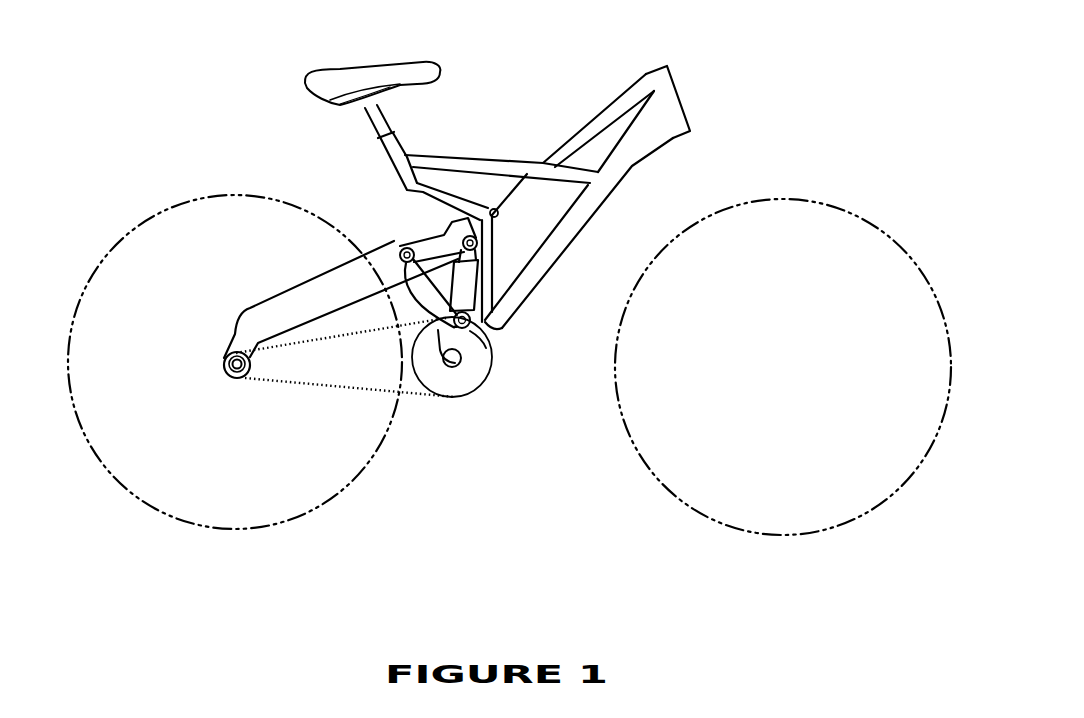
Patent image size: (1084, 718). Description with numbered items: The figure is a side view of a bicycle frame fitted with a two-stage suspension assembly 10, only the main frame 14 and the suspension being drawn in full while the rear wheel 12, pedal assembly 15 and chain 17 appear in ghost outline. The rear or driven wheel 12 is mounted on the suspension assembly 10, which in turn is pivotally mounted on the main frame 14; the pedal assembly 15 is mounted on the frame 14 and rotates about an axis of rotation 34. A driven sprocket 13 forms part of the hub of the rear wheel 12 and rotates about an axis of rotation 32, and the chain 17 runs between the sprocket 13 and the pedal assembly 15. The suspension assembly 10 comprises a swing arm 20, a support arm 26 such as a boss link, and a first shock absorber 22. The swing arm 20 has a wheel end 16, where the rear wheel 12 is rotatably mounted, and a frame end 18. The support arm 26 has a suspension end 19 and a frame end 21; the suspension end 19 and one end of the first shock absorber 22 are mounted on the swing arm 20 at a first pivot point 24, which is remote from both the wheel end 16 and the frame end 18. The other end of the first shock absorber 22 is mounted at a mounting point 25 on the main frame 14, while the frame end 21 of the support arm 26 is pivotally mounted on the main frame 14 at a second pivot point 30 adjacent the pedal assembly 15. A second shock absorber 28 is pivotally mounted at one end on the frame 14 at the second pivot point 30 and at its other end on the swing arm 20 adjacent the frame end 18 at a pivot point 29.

The two-stage suspension assembly 10 is at (276, 82).
The rear wheel 12 is at (184, 206).
The driven sprocket 13 is at (243, 380).
The main frame 14 is at (502, 162).
The pedal assembly 15 is at (468, 412).
The wheel end 16 is at (225, 347).
The chain 17 is at (328, 392).
The frame end 18 is at (415, 214).
The suspension end 19 is at (397, 246).
The swing arm 20 is at (305, 295).
The frame end 21 is at (486, 323).
The first shock absorber 22 is at (447, 237).
The first pivot point 24 is at (398, 243).
The mounting point 25 is at (498, 213).
The support arm 26 is at (447, 237).
The second shock absorber 28 is at (470, 288).
The pivot point 29 is at (477, 243).
The second pivot point 30 is at (478, 345).
The axis of rotation 32 is at (231, 380).
The axis of rotation 34 is at (457, 362).